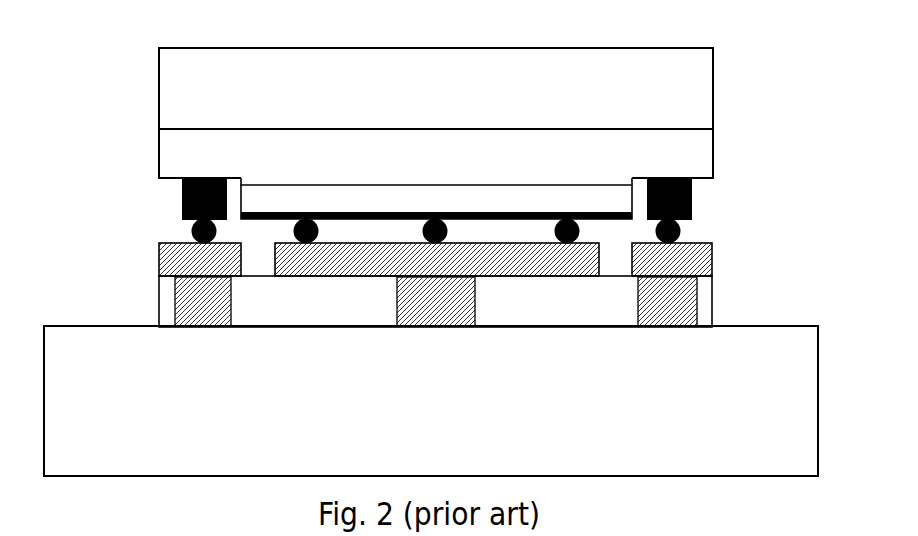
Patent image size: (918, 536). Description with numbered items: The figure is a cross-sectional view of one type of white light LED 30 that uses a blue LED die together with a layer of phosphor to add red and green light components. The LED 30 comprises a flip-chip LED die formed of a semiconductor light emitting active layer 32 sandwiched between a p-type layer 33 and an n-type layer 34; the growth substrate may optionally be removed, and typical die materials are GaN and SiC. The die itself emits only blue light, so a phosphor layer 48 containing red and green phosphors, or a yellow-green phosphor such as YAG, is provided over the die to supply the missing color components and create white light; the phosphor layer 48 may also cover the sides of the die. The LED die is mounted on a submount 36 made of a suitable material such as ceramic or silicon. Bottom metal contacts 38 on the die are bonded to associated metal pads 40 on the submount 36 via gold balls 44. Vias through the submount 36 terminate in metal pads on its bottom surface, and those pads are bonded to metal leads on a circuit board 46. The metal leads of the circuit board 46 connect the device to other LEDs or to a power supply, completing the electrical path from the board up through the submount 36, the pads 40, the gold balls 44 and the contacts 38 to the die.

The white light LED 30 is at (124, 79).
The phosphor layer 48 is at (713, 97).
The n-type layer 34 is at (713, 153).
The semiconductor light emitting active layer 32 is at (355, 185).
The p-type layer 33 is at (298, 195).
The bottom metal contacts 38 is at (645, 193).
The gold balls 44 is at (578, 228).
The metal pads 40 is at (712, 260).
The submount 36 is at (712, 303).
The circuit board 46 is at (443, 412).